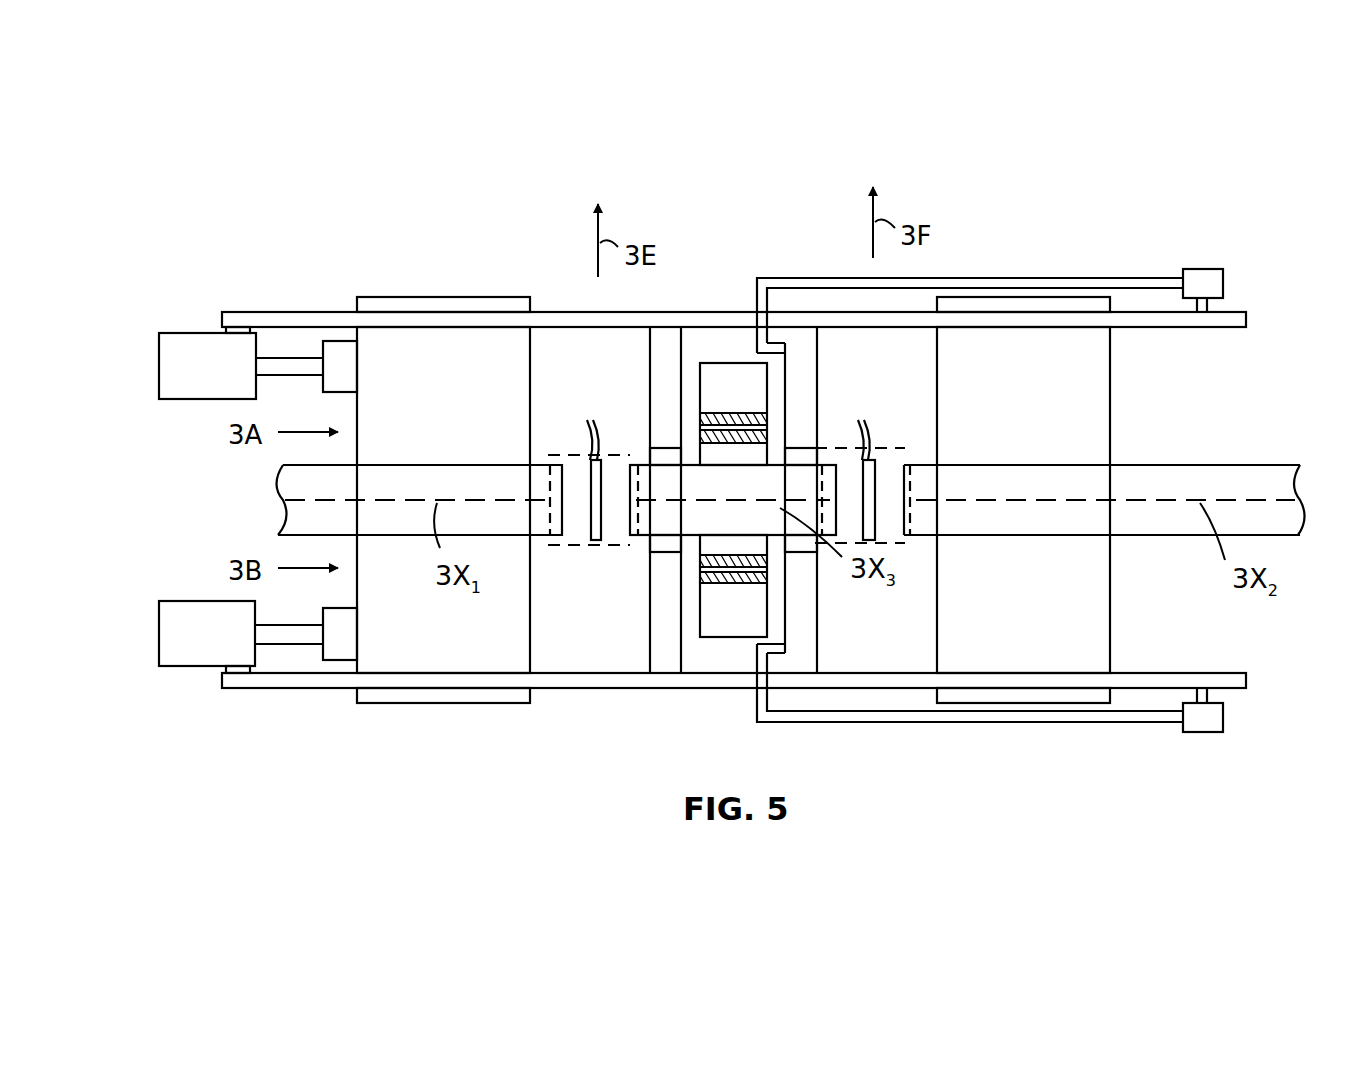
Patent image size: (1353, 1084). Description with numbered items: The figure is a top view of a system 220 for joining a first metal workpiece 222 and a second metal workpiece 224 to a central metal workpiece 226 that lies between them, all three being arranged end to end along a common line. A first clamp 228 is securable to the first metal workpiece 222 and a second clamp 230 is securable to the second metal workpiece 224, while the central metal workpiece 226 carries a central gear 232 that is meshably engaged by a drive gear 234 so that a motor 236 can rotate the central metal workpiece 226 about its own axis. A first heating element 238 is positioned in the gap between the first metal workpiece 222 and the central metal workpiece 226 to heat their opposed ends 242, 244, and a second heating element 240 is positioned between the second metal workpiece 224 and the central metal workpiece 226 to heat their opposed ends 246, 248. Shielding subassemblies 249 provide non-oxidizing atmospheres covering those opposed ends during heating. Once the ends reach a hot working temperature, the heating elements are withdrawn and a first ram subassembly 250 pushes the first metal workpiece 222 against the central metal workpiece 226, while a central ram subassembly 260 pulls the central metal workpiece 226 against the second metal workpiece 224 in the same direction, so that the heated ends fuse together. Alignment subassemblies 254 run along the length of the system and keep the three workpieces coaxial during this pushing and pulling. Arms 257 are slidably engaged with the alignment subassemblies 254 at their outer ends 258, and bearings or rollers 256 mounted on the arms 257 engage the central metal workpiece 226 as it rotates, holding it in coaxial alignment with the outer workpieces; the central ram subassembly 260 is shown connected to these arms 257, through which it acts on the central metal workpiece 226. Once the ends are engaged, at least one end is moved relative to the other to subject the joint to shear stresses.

The system 220 is at (1112, 232).
The first metal workpiece 222 is at (470, 470).
The second metal workpiece 224 is at (1260, 470).
The central metal workpiece 226 is at (653, 472).
The first clamp 228 is at (462, 641).
The second clamp 230 is at (1040, 637).
The central gear 232 is at (703, 552).
The drive gear 234 is at (700, 428).
The motor 236 is at (728, 625).
The first heating element 238 is at (591, 523).
The second heating element 240 is at (875, 455).
The opposed end of first metal workpiece 242 is at (550, 452).
The opposed end of central metal workpiece 244 is at (630, 527).
The opposed end of second metal workpiece 246 is at (915, 468).
The opposed end of central metal workpiece 248 is at (822, 460).
The shielding subassembly 249 is at (572, 455).
The first ram subassembly 250 is at (170, 632).
The alignment subassembly 254 is at (345, 310).
The bearings or rollers 256 is at (807, 553).
The arms 257 is at (798, 628).
The outer ends of arms 258 is at (650, 663).
The central ram subassembly 260 is at (1203, 275).